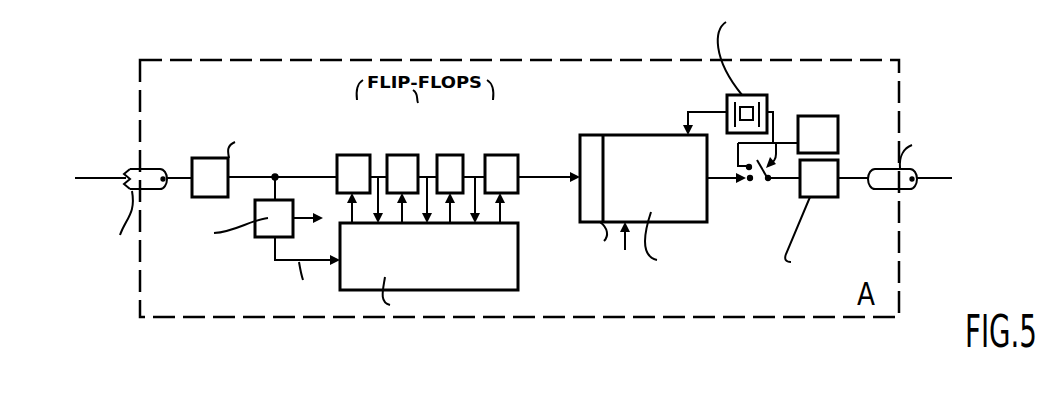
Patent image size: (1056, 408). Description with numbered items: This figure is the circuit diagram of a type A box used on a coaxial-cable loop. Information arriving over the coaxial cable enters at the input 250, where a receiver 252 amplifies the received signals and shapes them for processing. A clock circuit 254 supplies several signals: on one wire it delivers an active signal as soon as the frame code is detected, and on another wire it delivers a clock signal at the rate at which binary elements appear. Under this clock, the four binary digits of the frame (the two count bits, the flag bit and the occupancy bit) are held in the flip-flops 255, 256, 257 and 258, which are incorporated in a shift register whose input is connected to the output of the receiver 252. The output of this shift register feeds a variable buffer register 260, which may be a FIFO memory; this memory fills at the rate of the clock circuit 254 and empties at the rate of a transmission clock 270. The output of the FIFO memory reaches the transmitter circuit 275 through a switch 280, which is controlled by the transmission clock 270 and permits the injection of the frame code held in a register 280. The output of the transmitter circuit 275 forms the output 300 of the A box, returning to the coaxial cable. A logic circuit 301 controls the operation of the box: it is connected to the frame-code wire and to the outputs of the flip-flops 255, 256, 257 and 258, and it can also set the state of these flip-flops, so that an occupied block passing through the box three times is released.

The input 250 is at (133, 169).
The receiver 252 is at (215, 170).
The clock circuit 254 is at (263, 236).
The flip-flop 255 is at (362, 154).
The flip-flop 256 is at (405, 154).
The flip-flop 257 is at (455, 154).
The flip-flop 258 is at (518, 175).
The variable buffer register 260 is at (637, 150).
The transmission clock 270 is at (760, 95).
The transmitter circuit 275 is at (818, 188).
The switch 280 is at (838, 135).
The output 300 is at (900, 190).
The logic circuit 301 is at (518, 266).